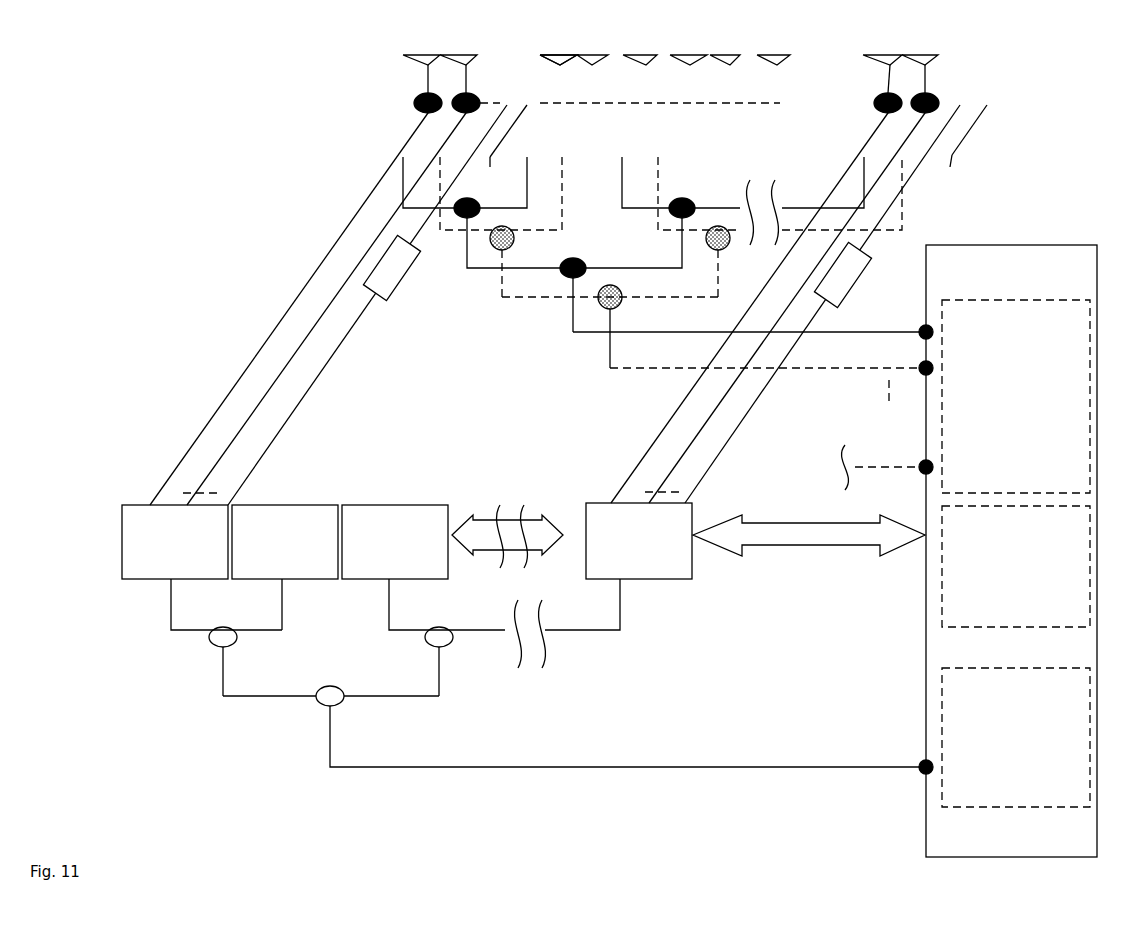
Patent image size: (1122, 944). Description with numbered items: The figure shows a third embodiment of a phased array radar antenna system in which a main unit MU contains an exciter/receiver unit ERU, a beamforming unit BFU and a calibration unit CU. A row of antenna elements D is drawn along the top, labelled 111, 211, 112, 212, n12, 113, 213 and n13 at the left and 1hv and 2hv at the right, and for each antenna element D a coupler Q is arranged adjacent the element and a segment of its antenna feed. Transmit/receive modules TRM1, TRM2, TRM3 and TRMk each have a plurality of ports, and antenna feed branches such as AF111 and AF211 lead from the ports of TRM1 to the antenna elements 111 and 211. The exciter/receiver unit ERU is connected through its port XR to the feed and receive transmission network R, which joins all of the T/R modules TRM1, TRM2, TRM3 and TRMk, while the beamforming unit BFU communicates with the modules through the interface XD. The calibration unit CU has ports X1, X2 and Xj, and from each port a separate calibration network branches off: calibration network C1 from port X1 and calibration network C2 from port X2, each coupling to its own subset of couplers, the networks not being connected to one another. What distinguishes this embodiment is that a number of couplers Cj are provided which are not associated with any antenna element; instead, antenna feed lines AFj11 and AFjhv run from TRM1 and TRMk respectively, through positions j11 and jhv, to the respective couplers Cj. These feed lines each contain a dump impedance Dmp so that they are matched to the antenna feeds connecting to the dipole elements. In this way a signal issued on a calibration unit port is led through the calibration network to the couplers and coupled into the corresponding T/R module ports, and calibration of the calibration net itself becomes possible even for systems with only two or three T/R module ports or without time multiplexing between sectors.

The antenna element D is at (480, 38).
The coupler Q is at (564, 117).
The antenna element/coupler 111 is at (296, 270).
The antenna element/coupler 211 is at (333, 270).
The coupler position j11 is at (377, 305).
The antenna element/coupler 112 is at (537, 96).
The antenna element/coupler 212 is at (574, 96).
The antenna element/coupler n12 is at (621, 96).
The antenna element/coupler 113 is at (667, 96).
The antenna element/coupler 213 is at (725, 50).
The antenna element/coupler n13 is at (773, 50).
The antenna element/coupler 1hv is at (756, 269).
The antenna element/coupler 2hv is at (794, 269).
The coupler position jhv is at (836, 304).
The coupler not associated with any antenna element Cj is at (678, 323).
The dump impedance Dmp is at (636, 271).
The calibration network C1 is at (749, 321).
The calibration network C2 is at (768, 358).
The main unit MU is at (1011, 551).
The calibration unit CU is at (1016, 396).
The beamforming unit BFU is at (1016, 566).
The exciter/receiver unit ERU is at (1016, 737).
The calibration unit port X1 is at (947, 333).
The calibration unit port X2 is at (947, 370).
The calibration unit port Xj is at (944, 469).
The data interface of main unit XD is at (835, 535).
The receive port of exciter/receiver unit XR is at (947, 770).
The feed and receive transmission network R is at (628, 736).
The antenna feed branch AF111 is at (190, 455).
The antenna feed branch AF211 is at (264, 427).
The antenna feed line to coupler AFj11 is at (326, 427).
The antenna feed line to coupler AFjhv is at (699, 456).
The T/R module TRM1 is at (202, 567).
The T/R module TRM2 is at (285, 567).
The T/R module TRM3 is at (423, 567).
The T/R module TRMk is at (618, 566).